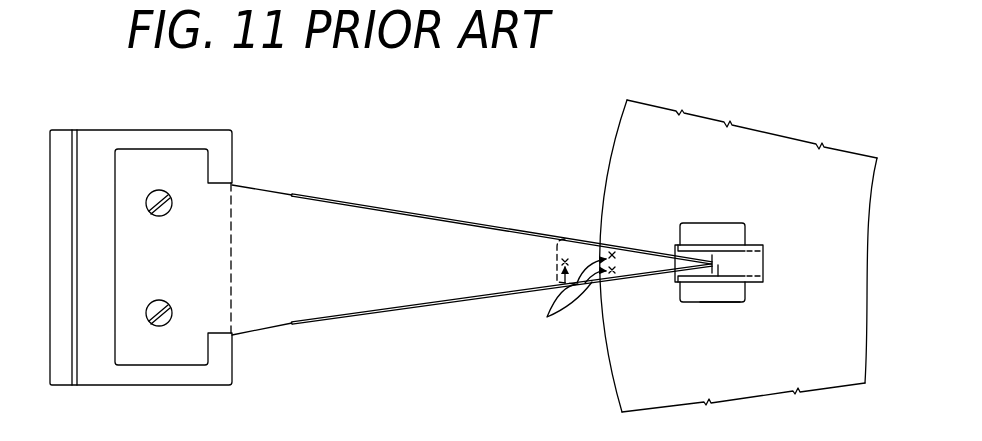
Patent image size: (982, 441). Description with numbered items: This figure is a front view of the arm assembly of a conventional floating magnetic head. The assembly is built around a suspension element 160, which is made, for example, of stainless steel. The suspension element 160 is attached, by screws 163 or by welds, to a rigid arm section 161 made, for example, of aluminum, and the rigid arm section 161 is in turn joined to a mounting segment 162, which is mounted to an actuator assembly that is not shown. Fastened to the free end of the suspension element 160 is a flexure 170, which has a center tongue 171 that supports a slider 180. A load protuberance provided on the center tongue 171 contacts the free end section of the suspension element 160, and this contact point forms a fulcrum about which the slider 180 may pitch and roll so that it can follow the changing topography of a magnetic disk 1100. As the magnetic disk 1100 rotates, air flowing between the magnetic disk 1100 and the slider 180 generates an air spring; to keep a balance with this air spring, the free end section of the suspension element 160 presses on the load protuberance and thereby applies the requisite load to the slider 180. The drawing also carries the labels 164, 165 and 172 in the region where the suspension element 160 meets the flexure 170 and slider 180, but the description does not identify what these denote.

The magnetic disk 1100 is at (772, 145).
The suspension element 160 is at (379, 197).
The rigid arm section 161 is at (167, 137).
The mounting segment 162 is at (60, 137).
The screws 163 is at (166, 212).
The wire insulation stripped region 164 is at (559, 293).
The wire conductor end 165 is at (718, 265).
The flexure 170 is at (770, 259).
The center tongue 171 is at (708, 285).
The terminal tube ends 172 is at (742, 246).
The slider 180 is at (733, 302).